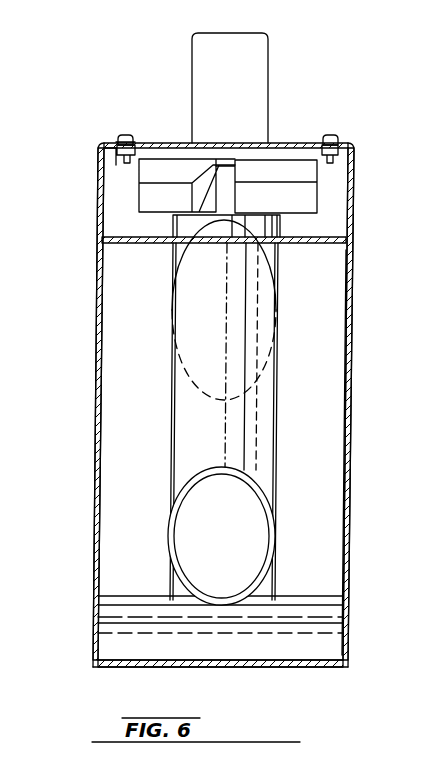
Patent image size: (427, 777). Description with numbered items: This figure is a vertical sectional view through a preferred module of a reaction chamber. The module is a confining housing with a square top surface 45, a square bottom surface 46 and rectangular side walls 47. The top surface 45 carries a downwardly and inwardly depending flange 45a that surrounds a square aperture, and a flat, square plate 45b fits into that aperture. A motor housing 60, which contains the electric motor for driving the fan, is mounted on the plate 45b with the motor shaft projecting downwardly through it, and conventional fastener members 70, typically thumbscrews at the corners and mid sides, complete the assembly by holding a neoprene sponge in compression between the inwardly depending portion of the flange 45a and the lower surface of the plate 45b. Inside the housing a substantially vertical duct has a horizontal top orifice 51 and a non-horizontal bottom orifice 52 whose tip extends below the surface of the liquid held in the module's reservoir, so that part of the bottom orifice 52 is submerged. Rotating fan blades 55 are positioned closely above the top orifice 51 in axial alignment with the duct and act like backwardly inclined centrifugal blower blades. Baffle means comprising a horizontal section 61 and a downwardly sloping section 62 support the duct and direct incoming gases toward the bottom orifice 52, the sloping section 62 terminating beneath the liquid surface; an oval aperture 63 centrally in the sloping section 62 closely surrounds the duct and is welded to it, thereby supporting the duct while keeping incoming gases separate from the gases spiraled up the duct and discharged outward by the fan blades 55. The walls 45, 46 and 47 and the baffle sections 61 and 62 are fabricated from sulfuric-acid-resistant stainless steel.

The top surface 45 is at (84, 144).
The flange 45a is at (117, 156).
The flat square top surface 45b is at (275, 144).
The bottom surface 46 is at (178, 666).
The side walls 47 is at (356, 308).
The top orifice 51 is at (282, 238).
The bottom orifice 52 is at (276, 551).
The rotating fan blades 55 is at (283, 208).
The motor housing 60 is at (270, 52).
The horizontal section 61 is at (150, 243).
The downwardly sloping section 62 is at (341, 478).
The oval aperture 63 is at (263, 276).
The fastener members 70 is at (134, 139).